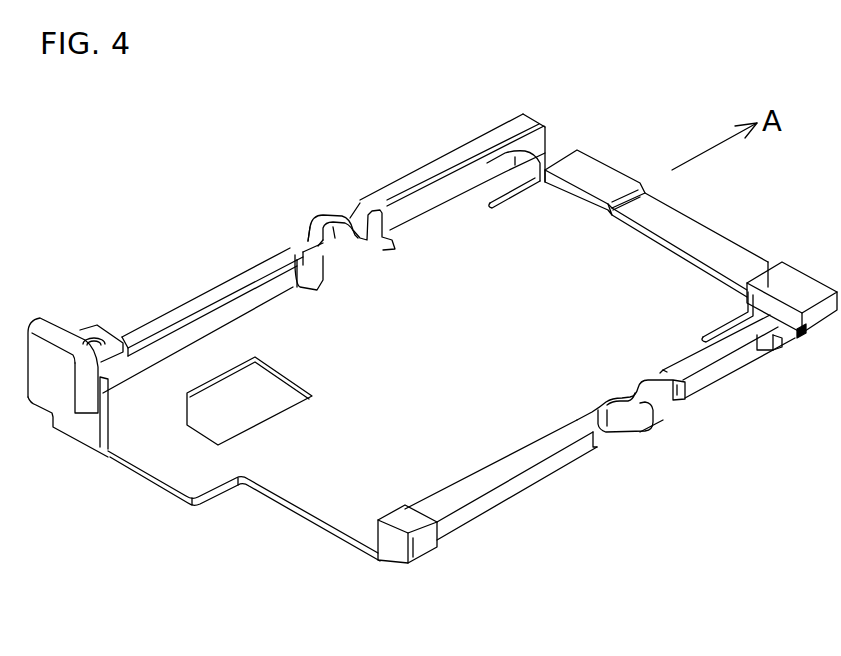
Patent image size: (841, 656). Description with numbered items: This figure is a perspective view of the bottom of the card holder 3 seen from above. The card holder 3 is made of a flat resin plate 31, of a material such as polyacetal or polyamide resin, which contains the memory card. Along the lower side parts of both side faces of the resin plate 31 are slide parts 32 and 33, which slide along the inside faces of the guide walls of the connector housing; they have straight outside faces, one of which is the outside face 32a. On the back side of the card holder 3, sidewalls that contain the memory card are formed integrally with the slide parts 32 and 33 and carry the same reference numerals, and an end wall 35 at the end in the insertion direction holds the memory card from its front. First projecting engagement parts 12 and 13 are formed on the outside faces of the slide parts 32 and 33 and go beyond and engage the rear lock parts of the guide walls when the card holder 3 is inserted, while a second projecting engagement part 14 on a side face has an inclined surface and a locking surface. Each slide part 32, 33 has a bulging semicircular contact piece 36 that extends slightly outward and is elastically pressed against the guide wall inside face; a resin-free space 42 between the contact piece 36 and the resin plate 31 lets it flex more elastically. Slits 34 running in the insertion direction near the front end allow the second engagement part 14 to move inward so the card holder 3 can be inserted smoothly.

The card holder 3 is at (391, 150).
The first projecting engagement part 12 is at (783, 350).
The first projecting engagement part 13 is at (433, 160).
The second projecting engagement part 14 is at (800, 340).
The flat resin plate 31 is at (412, 428).
The slide part (sidewall) 32 is at (542, 443).
The outside face 32a is at (548, 477).
The slide part (sidewall) 33 is at (193, 305).
The slit 34 is at (509, 191).
The end wall 35 is at (600, 175).
The contact piece 36 is at (308, 228).
The space 42 is at (348, 258).